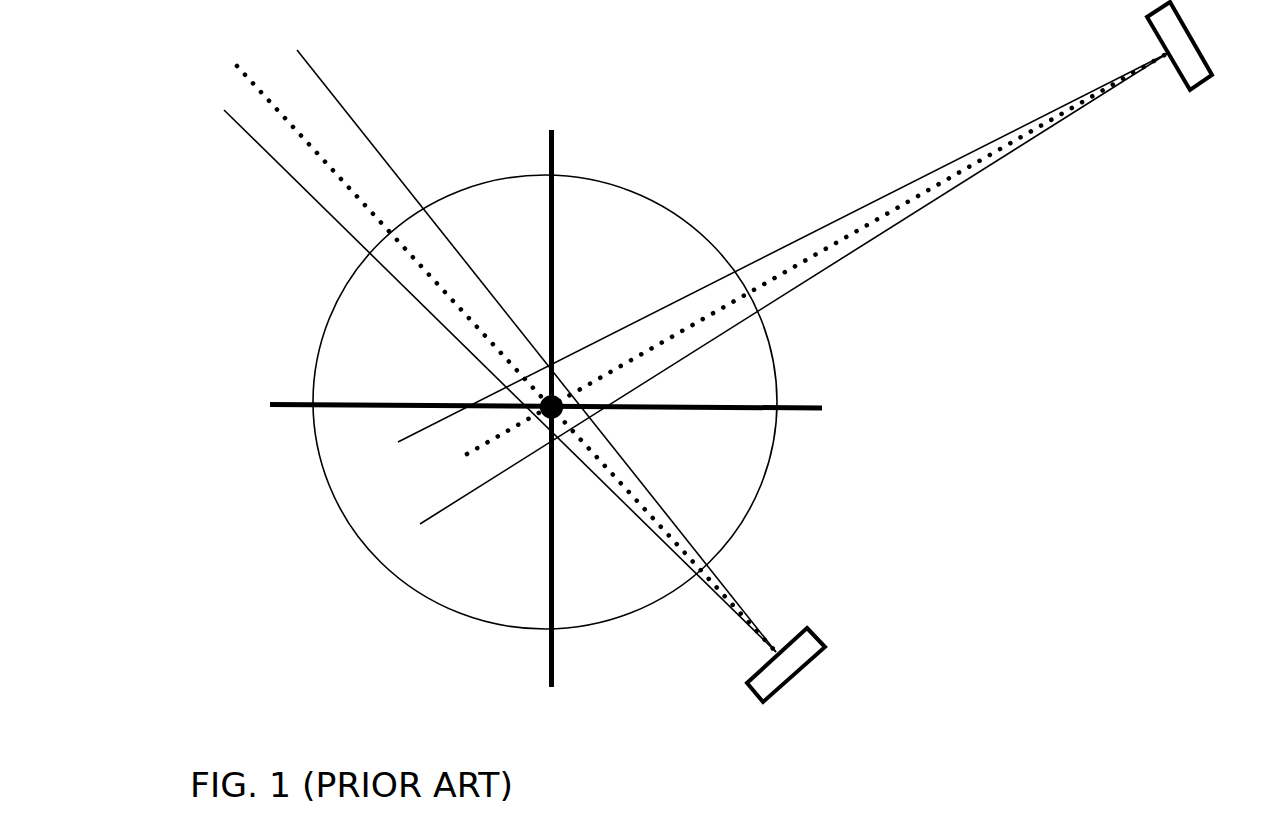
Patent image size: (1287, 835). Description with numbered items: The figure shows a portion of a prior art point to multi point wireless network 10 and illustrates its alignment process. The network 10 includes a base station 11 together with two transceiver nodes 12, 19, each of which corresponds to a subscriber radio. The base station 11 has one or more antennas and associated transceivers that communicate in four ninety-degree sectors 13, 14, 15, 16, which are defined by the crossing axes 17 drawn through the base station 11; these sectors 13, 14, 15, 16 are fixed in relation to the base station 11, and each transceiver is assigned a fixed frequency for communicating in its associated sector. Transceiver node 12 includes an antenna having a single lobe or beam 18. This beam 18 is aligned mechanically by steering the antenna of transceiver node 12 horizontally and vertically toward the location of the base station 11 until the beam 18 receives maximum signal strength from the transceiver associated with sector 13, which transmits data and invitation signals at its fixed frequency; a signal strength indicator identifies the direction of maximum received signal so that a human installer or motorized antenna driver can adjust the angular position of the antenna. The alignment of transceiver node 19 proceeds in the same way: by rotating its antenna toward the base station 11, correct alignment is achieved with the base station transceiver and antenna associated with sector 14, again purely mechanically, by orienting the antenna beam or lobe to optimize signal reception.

The point to multi point wireless network 10 is at (1004, 317).
The base station 11 is at (565, 392).
The transceiver node 12 is at (1195, 72).
The sector 13 is at (597, 187).
The sector 14 is at (757, 465).
The sector 15 is at (375, 557).
The sector 16 is at (340, 303).
The axes 17 is at (550, 653).
The beam 18 is at (932, 183).
The transceiver node 19 is at (757, 668).